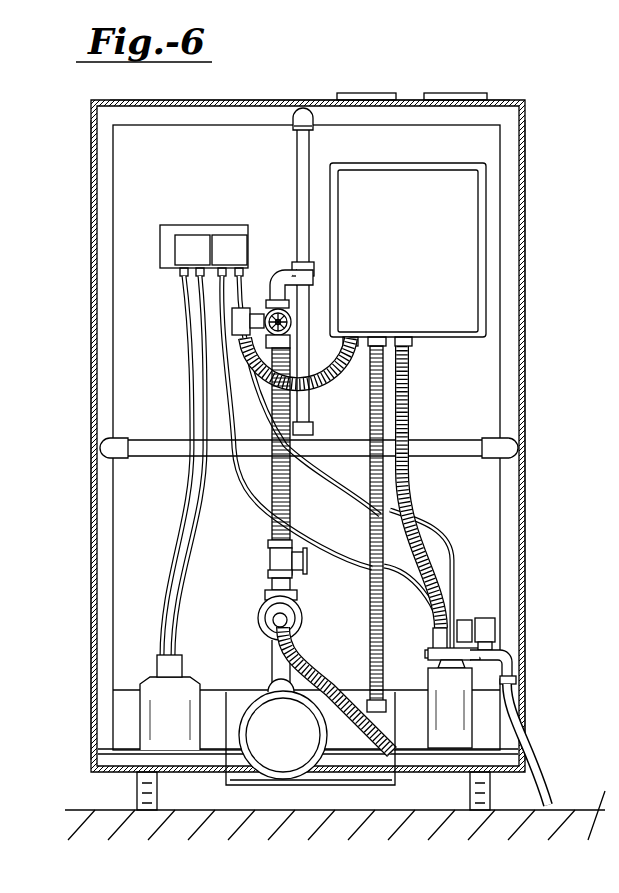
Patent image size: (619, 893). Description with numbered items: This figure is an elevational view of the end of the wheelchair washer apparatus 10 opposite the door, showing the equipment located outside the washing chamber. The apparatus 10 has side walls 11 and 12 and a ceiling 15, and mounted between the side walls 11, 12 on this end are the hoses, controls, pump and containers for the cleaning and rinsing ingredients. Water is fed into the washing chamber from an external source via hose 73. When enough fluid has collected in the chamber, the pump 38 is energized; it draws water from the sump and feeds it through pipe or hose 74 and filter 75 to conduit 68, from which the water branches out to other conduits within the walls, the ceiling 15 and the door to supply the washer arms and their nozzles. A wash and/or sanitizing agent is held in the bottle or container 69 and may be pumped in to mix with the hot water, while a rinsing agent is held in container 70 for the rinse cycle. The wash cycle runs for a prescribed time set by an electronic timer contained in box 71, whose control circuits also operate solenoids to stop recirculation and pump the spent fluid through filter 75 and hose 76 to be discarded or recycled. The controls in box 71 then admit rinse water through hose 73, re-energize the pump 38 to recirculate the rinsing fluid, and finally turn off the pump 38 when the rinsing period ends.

The washer apparatus 10 is at (82, 486).
The side wall 11 is at (90, 325).
The side wall 12 is at (527, 370).
The ceiling 15 is at (242, 98).
The pump 38 is at (238, 725).
The conduit 68 is at (290, 465).
The container 69 is at (140, 716).
The container 70 is at (424, 718).
The box 71 is at (458, 247).
The hose 73 is at (550, 758).
The pipe or hose 74 is at (268, 662).
The filter 75 is at (262, 616).
The hose 76 is at (313, 672).